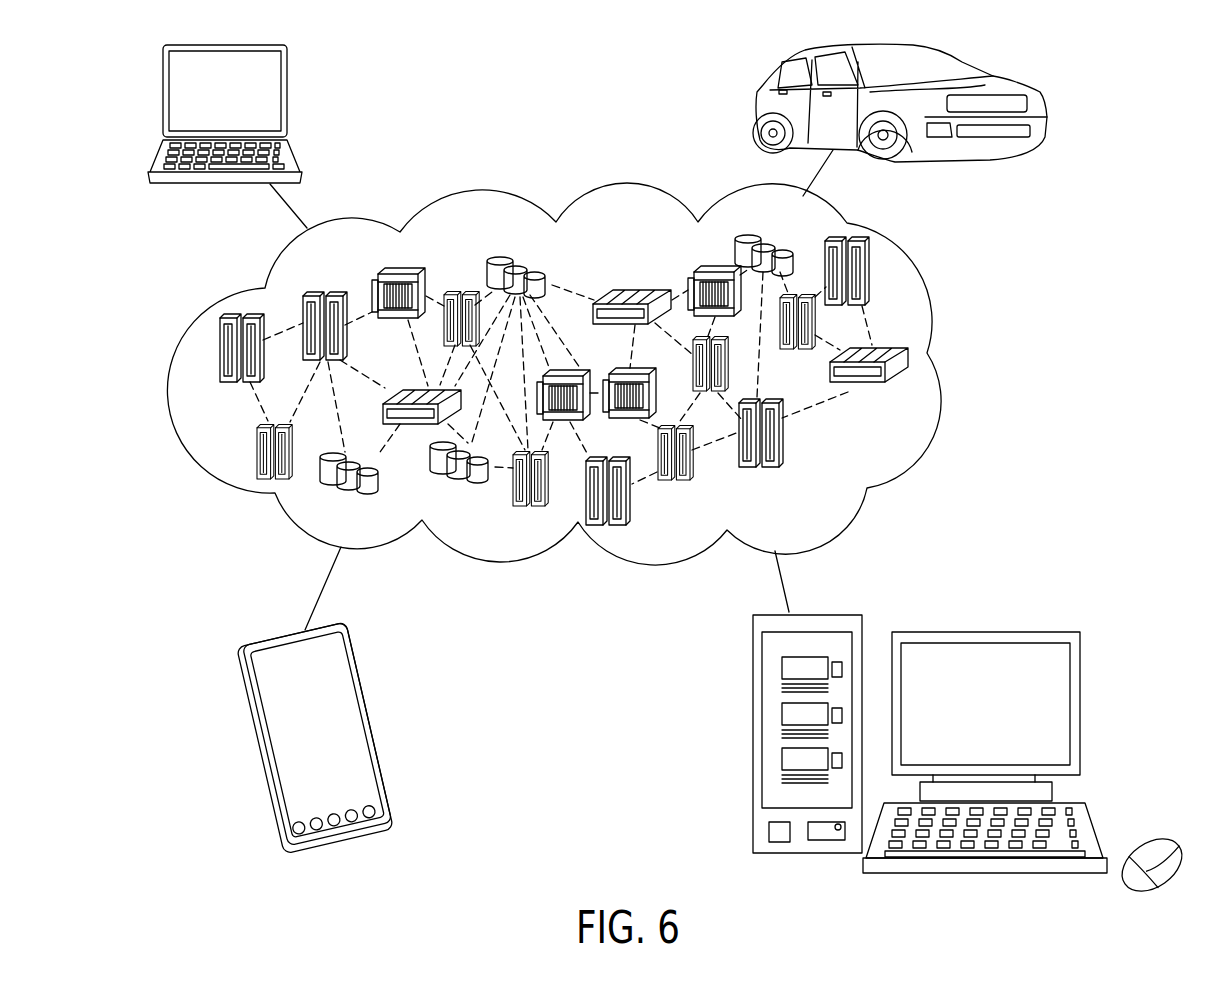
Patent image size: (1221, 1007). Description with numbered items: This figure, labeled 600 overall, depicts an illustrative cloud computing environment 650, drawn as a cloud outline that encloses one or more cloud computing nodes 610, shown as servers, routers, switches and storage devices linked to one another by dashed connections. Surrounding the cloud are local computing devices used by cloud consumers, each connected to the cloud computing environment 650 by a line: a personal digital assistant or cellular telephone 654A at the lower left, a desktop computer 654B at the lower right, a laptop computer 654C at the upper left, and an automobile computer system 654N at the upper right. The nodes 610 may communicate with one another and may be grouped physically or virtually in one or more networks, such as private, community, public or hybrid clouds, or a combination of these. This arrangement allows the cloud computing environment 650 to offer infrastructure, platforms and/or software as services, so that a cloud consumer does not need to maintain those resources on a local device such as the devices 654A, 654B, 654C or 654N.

The network environment 600 is at (1210, 57).
The cloud computing nodes 610 is at (872, 435).
The cloud computing environment 650 is at (930, 305).
The personal digital assistant (PDA) or cellular telephone 654A is at (252, 758).
The desktop computer 654B is at (1080, 683).
The laptop computer 654C is at (288, 78).
The automobile computer system 654N is at (788, 72).